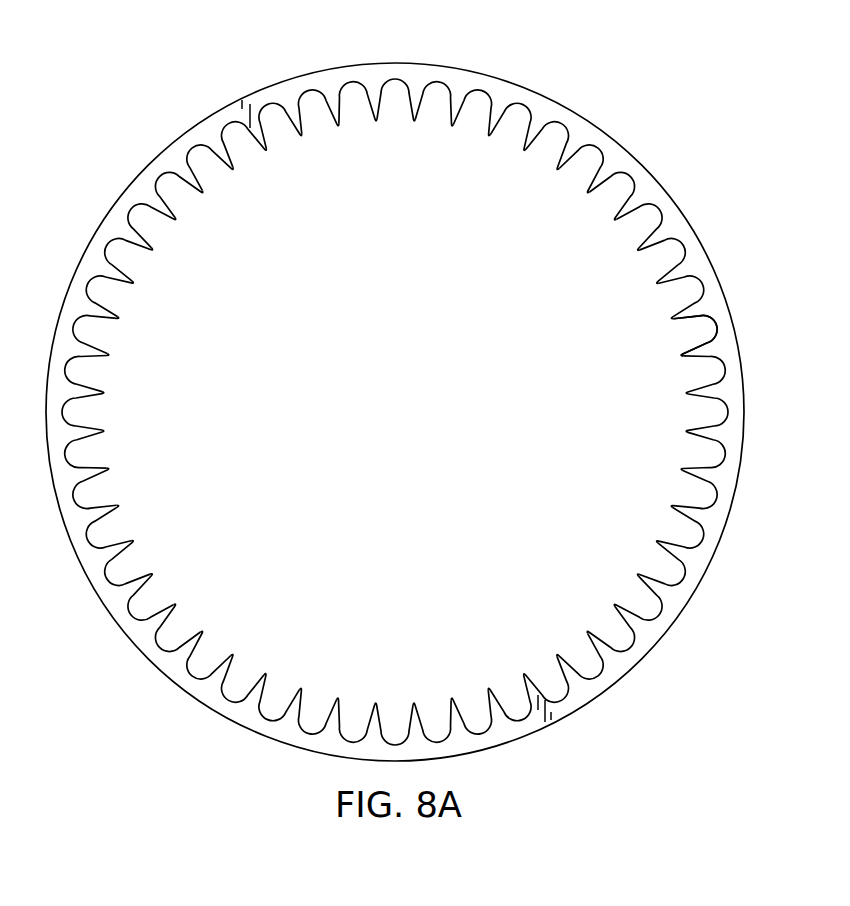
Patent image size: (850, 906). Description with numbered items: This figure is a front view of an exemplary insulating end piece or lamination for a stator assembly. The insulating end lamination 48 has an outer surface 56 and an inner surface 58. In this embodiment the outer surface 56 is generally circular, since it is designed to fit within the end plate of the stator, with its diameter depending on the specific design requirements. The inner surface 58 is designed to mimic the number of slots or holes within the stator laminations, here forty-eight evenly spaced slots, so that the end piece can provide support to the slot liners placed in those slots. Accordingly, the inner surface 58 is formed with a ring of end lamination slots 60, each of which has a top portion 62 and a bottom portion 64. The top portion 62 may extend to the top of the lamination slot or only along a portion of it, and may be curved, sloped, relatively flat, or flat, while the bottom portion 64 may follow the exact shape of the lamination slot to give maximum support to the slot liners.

The insulating end lamination 48 is at (563, 69).
The outer surface 56 is at (641, 164).
The inner surface 58 is at (567, 161).
The end lamination slots 60 is at (714, 334).
The top portion 62 is at (660, 277).
The bottom portion 64 is at (714, 323).